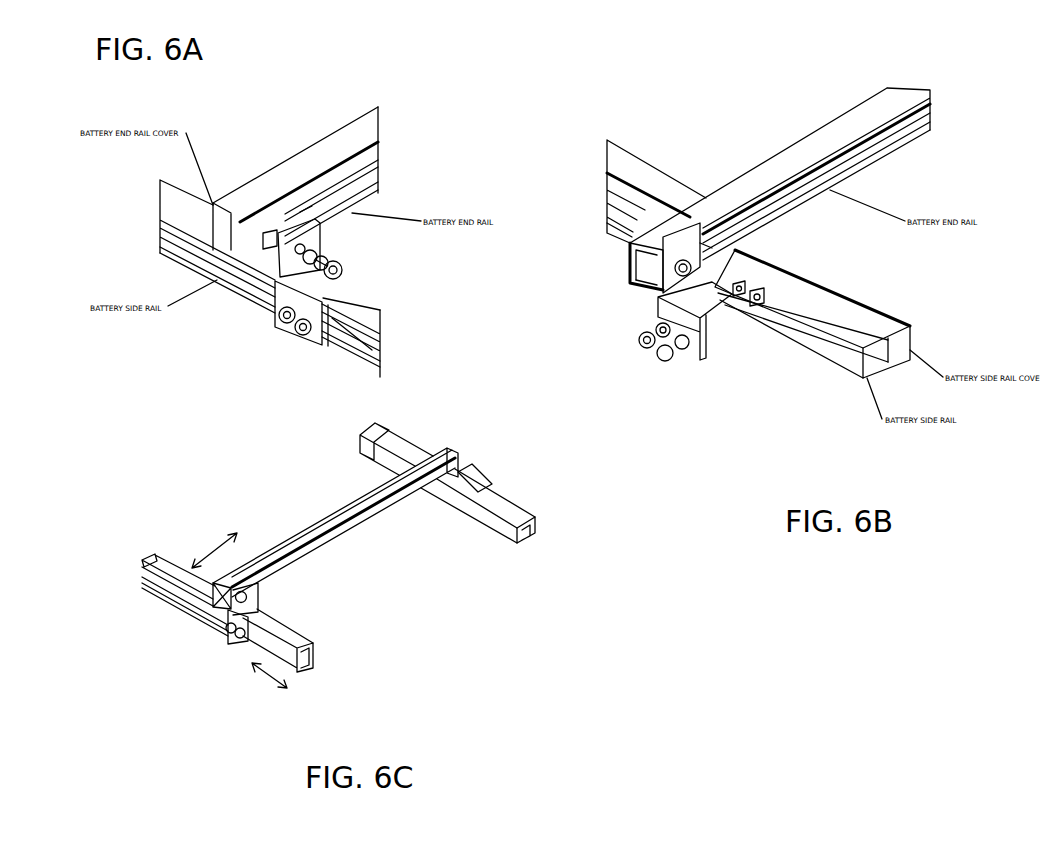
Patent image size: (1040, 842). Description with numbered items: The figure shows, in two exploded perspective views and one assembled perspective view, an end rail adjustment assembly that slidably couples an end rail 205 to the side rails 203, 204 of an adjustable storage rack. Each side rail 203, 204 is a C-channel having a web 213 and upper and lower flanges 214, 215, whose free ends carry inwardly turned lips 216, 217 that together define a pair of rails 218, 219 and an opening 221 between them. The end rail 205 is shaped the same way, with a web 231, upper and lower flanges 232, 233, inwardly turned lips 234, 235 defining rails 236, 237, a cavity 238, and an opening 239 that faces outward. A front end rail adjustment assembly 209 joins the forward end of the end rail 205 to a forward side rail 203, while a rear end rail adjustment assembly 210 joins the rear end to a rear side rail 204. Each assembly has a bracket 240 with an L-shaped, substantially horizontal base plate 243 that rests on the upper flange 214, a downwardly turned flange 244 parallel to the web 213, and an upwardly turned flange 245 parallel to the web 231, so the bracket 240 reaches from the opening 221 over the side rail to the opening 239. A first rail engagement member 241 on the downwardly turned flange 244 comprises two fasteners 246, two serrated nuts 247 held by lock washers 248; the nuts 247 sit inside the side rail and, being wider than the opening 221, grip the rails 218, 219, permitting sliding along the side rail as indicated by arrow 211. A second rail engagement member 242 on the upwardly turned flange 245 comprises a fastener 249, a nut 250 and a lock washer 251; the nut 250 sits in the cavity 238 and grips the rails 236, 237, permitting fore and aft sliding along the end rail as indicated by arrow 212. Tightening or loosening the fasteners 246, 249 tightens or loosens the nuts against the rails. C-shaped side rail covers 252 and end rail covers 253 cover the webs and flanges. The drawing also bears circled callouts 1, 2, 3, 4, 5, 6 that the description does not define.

In FIG. 6A, the callout 1 (bracket plate) 1 is at (313, 340).
In FIG. 6B, the callout 1 (bracket plate) 1 is at (703, 361).
In FIG. 6C, the callout 1 (bracket plate) 1 is at (262, 605).
In FIG. 6C, the callout 2 (bracket plate) 2 is at (481, 470).
In FIG. 6A, the callout 3 (bolt) 3 is at (348, 269).
In FIG. 6B, the callout 3 (bolt) 3 is at (666, 362).
In FIG. 6A, the callout 4 (washer) 4 is at (318, 246).
In FIG. 6A, the callout 5 (nut) 5 is at (330, 259).
In FIG. 6B, the callout 5 (nut) 5 is at (683, 351).
In FIG. 6A, the callout 6 (clip) 6 is at (262, 262).
In FIG. 6B, the callout 6 (clip) 6 is at (755, 353).
In FIG. 6A, the side rail 203 is at (160, 221).
In FIG. 6B, the side rail 203 is at (857, 298).
In FIG. 6C, the side rail 203 is at (169, 612).
In FIG. 6A, the side rail 204 is at (270, 304).
In FIG. 6C, the side rail 204 is at (524, 498).
In FIG. 6A, the end rail 205 is at (326, 163).
In FIG. 6B, the end rail 205 is at (791, 143).
In FIG. 6C, the end rail 205 is at (309, 518).
In FIG. 6C, the front end rail adjustment assembly 209 is at (283, 614).
In FIG. 6C, the rear end rail adjustment assembly 210 is at (479, 459).
In FIG. 6C, the arrow 211 is at (268, 678).
In FIG. 6C, the arrow 212 is at (213, 550).
In FIG. 6B, the web 213 is at (915, 342).
In FIG. 6B, the upper flange 214 is at (895, 330).
In FIG. 6B, the lower flange 215 is at (875, 376).
In FIG. 6B, the inwardly turned lip 216 is at (915, 323).
In FIG. 6B, the inwardly turned lip 217 is at (873, 379).
In FIG. 6B, the rail 218 is at (851, 300).
In FIG. 6B, the rail 219 is at (833, 348).
In FIG. 6B, the opening 221 is at (851, 305).
In FIG. 6A, the web 231 is at (213, 203).
In FIG. 6B, the web 231 is at (630, 258).
In FIG. 6A, the upper flange 232 is at (250, 230).
In FIG. 6B, the upper flange 232 is at (648, 222).
In FIG. 6A, the lower flange 233 is at (242, 263).
In FIG. 6B, the lower flange 233 is at (640, 278).
In FIG. 6B, the inwardly turned lip 234 is at (650, 243).
In FIG. 6B, the inwardly turned lip 235 is at (645, 292).
In FIG. 6A, the rail 236 is at (363, 195).
In FIG. 6B, the rail 236 is at (682, 233).
In FIG. 6A, the rail 237 is at (381, 189).
In FIG. 6B, the rail 237 is at (808, 200).
In FIG. 6B, the cavity 238 is at (630, 273).
In FIG. 6B, the opening 239 is at (863, 155).
In FIG. 6A, the bracket 240 is at (328, 296).
In FIG. 6B, the bracket 240 is at (725, 317).
In FIG. 6C, the bracket 240 is at (230, 610).
In FIG. 6A, the first rail engagement member 241 is at (291, 350).
In FIG. 6B, the first rail engagement member 241 is at (658, 378).
In FIG. 6C, the first rail engagement member 241 is at (258, 596).
In FIG. 6A, the second rail engagement member 242 is at (353, 275).
In FIG. 6B, the second rail engagement member 242 is at (737, 250).
In FIG. 6C, the second rail engagement member 242 is at (241, 587).
In FIG. 6A, the base plate 243 is at (374, 380).
In FIG. 6B, the base plate 243 is at (737, 295).
In FIG. 6A, the downwardly turned flange 244 is at (314, 340).
In FIG. 6B, the downwardly turned flange 244 is at (692, 355).
In FIG. 6A, the upwardly turned flange 245 is at (308, 225).
In FIG. 6B, the upwardly turned flange 245 is at (745, 258).
In FIG. 6A, the fasteners 246 is at (282, 324).
In FIG. 6B, the fasteners 246 is at (646, 347).
In FIG. 6C, the fasteners 246 is at (230, 624).
In FIG. 6B, the nuts 247 is at (757, 345).
In FIG. 6B, the lock washers 248 is at (684, 360).
In FIG. 6A, the fastener 249 is at (356, 262).
In FIG. 6A, the nut 250 is at (278, 230).
In FIG. 6A, the lock washer 251 is at (360, 222).
In FIG. 6B, the side rail cover 252 is at (868, 312).
In FIG. 6C, the side rail cover 252 is at (500, 517).
In FIG. 6A, the end rail cover 253 is at (340, 140).